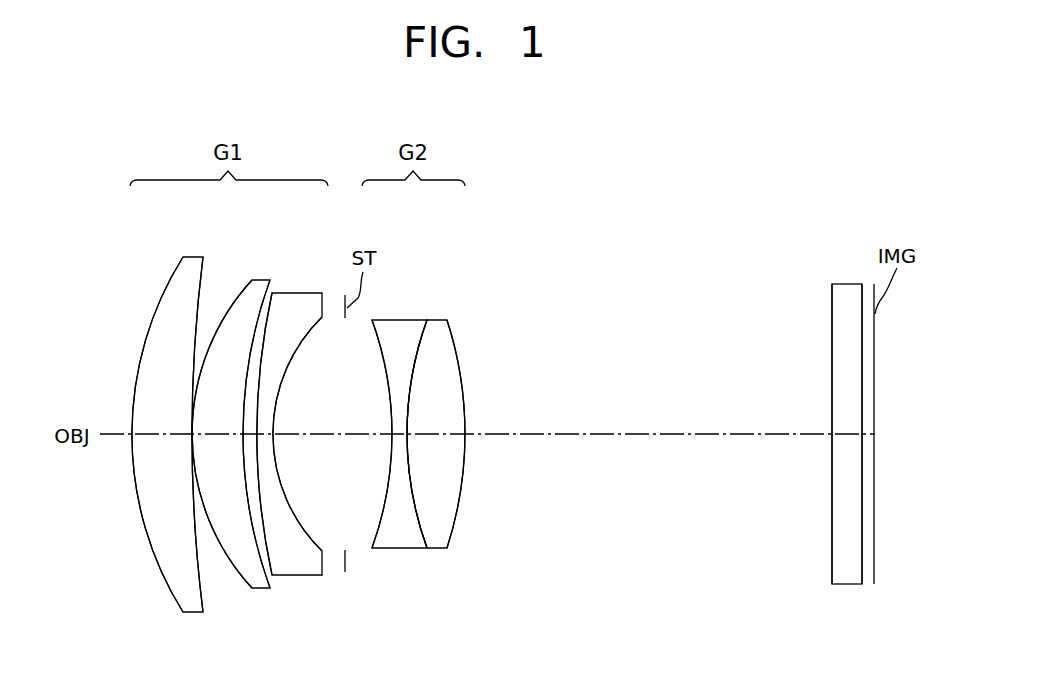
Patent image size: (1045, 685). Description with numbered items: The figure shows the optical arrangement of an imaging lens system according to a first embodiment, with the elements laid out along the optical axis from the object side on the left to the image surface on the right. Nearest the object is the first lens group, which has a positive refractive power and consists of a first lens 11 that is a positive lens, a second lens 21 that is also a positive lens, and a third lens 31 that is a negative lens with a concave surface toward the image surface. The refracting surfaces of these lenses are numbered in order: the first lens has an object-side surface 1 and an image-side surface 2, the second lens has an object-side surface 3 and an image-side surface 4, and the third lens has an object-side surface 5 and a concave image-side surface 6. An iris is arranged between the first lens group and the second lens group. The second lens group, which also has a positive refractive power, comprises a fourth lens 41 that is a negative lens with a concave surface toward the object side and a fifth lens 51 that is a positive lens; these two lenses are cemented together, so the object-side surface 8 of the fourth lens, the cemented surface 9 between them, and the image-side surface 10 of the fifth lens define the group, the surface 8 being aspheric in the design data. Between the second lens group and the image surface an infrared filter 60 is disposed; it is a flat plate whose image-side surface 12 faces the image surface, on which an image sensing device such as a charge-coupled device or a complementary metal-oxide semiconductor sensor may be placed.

The first lens 11 is at (192, 262).
The second lens 21 is at (257, 281).
The third lens 31 is at (313, 295).
The fourth lens 41 is at (396, 322).
The fifth lens 51 is at (437, 322).
The first surface 1 is at (160, 572).
The second surface 2 is at (200, 578).
The third surface 3 is at (240, 577).
The fourth surface 4 is at (260, 548).
The fifth surface 5 is at (263, 528).
The sixth surface 6 is at (308, 536).
The eighth surface 8 is at (380, 520).
The ninth surface 9 is at (418, 523).
The tenth surface 10 is at (457, 515).
The infrared filter 60 is at (843, 288).
The twelfth surface 12 is at (862, 562).